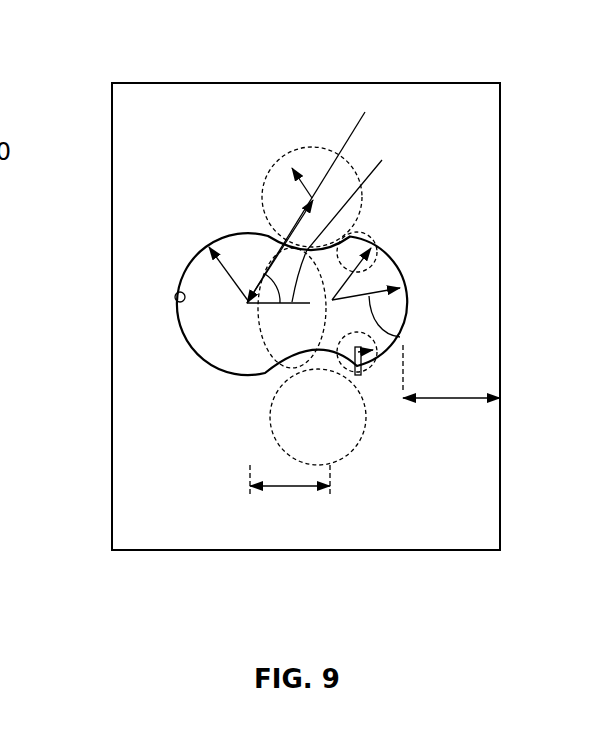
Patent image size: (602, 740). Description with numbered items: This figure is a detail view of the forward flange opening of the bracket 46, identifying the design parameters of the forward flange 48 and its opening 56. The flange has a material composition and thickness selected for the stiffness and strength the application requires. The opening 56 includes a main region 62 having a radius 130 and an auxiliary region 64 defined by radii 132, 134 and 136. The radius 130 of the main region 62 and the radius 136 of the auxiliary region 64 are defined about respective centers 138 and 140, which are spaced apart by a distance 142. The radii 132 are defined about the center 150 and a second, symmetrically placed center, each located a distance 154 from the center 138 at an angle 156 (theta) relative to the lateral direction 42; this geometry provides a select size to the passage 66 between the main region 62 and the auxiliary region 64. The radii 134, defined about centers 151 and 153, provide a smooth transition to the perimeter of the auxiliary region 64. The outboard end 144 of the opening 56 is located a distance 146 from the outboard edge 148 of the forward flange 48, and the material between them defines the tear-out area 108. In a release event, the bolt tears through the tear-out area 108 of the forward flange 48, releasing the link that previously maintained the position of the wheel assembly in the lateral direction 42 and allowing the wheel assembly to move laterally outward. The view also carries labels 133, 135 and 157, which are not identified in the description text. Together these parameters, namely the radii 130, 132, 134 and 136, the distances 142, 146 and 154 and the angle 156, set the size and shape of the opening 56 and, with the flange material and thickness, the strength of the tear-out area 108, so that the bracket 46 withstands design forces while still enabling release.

The bracket 46 is at (452, 81).
The forward flange 48 is at (139, 517).
The lateral direction 42 is at (355, 257).
The opening 56 is at (175, 300).
The main region 62 is at (247, 303).
The auxiliary region 64 is at (384, 273).
The passage 66 is at (332, 300).
The tear-out area 108 is at (478, 305).
The radius 130 is at (260, 237).
The radii 132 is at (303, 186).
The second circle 133 is at (268, 438).
The radii 134 is at (366, 255).
The slot 135 is at (364, 377).
The radius 136 is at (402, 335).
The center 138 is at (229, 351).
The center 140 is at (374, 252).
The distance 142 is at (293, 487).
The outboard end 144 is at (406, 298).
The distance 146 is at (453, 400).
The outboard edge 148 is at (500, 170).
The center 150 is at (357, 255).
The center 151 is at (310, 197).
The center 153 is at (358, 375).
The distance 154 is at (285, 248).
The angle 156 is at (222, 355).
The direction arrow 157 is at (289, 372).